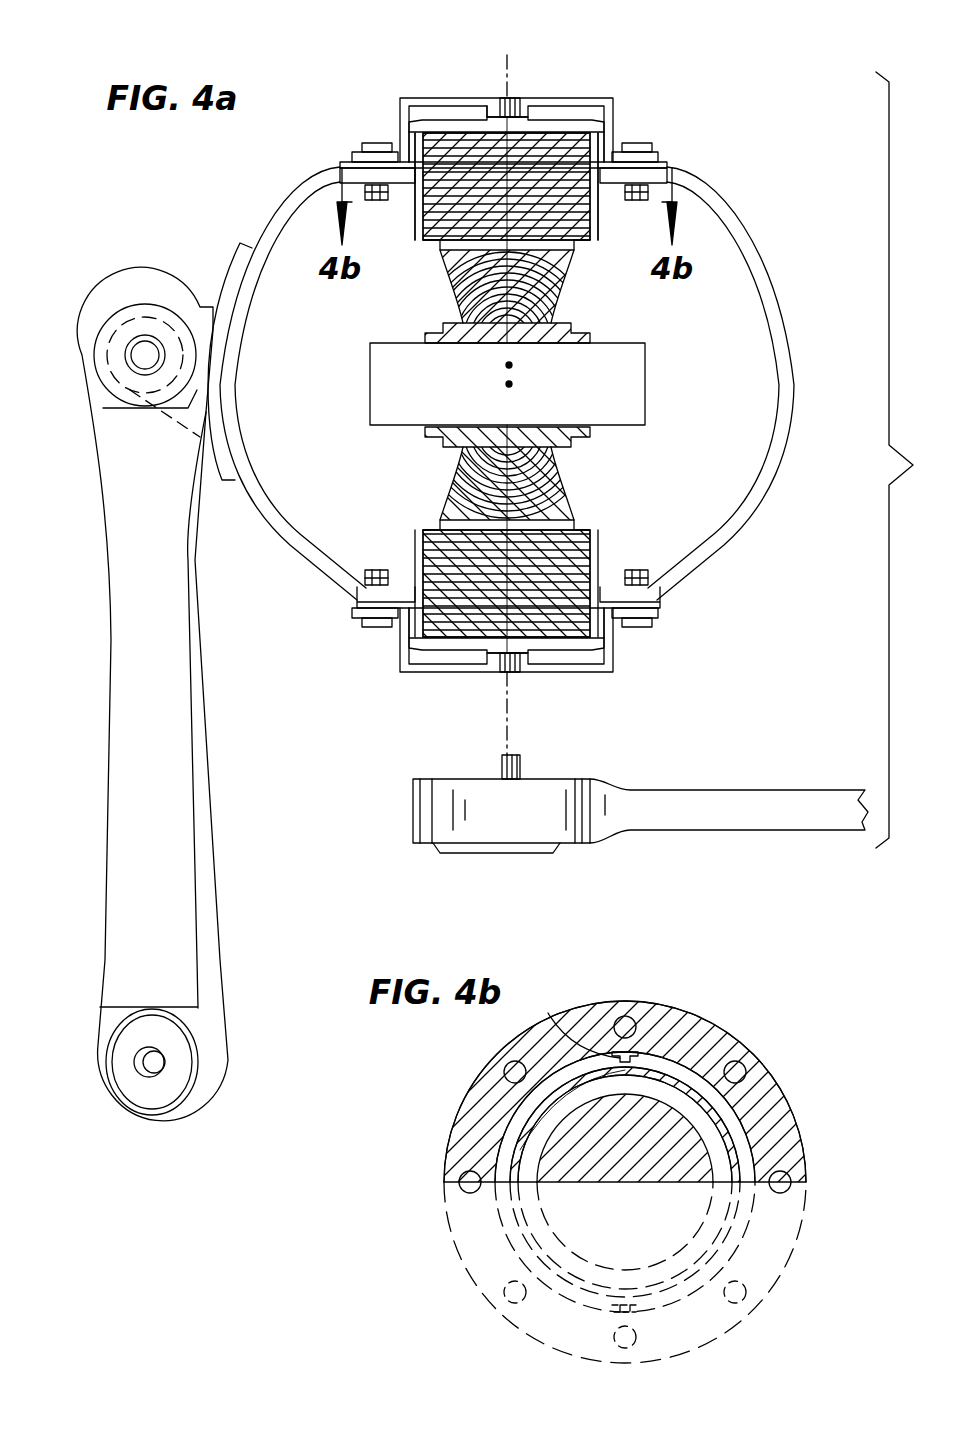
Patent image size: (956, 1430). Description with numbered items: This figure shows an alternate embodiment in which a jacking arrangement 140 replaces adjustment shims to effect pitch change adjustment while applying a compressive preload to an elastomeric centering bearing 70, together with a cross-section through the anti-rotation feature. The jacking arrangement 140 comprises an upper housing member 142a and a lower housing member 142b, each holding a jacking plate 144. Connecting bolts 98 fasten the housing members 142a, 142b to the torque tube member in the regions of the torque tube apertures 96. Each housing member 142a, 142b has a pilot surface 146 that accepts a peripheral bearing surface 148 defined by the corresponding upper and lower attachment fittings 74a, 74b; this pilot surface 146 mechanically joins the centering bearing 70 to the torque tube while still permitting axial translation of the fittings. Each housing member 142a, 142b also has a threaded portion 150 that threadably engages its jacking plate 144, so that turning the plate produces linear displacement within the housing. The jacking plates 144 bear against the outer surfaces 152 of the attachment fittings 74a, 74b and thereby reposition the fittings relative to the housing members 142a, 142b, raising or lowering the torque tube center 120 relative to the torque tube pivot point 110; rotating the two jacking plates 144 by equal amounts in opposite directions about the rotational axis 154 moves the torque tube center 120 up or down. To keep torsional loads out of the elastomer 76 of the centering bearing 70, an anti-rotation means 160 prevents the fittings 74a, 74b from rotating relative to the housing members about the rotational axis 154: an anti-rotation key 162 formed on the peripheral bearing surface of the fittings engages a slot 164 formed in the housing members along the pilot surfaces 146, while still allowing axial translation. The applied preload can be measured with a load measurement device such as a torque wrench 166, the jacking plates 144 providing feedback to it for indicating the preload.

In FIG. 4A, the elastomeric centering bearing 70 is at (662, 312).
In FIG. 4A, the upper attachment fitting 74a is at (426, 140).
In FIG. 4B, the upper attachment fitting 74a is at (728, 1140).
In FIG. 4A, the lower attachment fitting 74b is at (421, 640).
In FIG. 4A, the elastomer 76 is at (458, 284).
In FIG. 4B, the elastomer 76 is at (668, 1130).
In FIG. 4A, the torque tube aperture 96 is at (598, 196).
In FIG. 4A, the connecting bolt 98 is at (360, 152).
In FIG. 4A, the torque tube pivot point 110 is at (514, 386).
In FIG. 4A, the torque tube center 120 is at (514, 365).
In FIG. 4A, the jacking arrangement 140 is at (648, 92).
In FIG. 4A, the upper housing member 142a is at (400, 98).
In FIG. 4B, the upper housing member 142a is at (645, 1060).
In FIG. 4A, the lower housing member 142b is at (441, 672).
In FIG. 4A, the jacking plate 144 is at (562, 118).
In FIG. 4A, the pilot surface 146 is at (410, 140).
In FIG. 4A, the peripheral bearing surface 148 is at (420, 182).
In FIG. 4A, the threaded portion 150 is at (487, 106).
In FIG. 4A, the outer surface 152 is at (521, 106).
In FIG. 4A, the rotational axis 154 is at (512, 63).
In FIG. 4B, the anti-rotation means 160 is at (648, 1028).
In FIG. 4B, the anti-rotation key 162 is at (640, 1057).
In FIG. 4B, the slot 164 is at (551, 1017).
In FIG. 4A, the torque wrench 166 is at (425, 822).